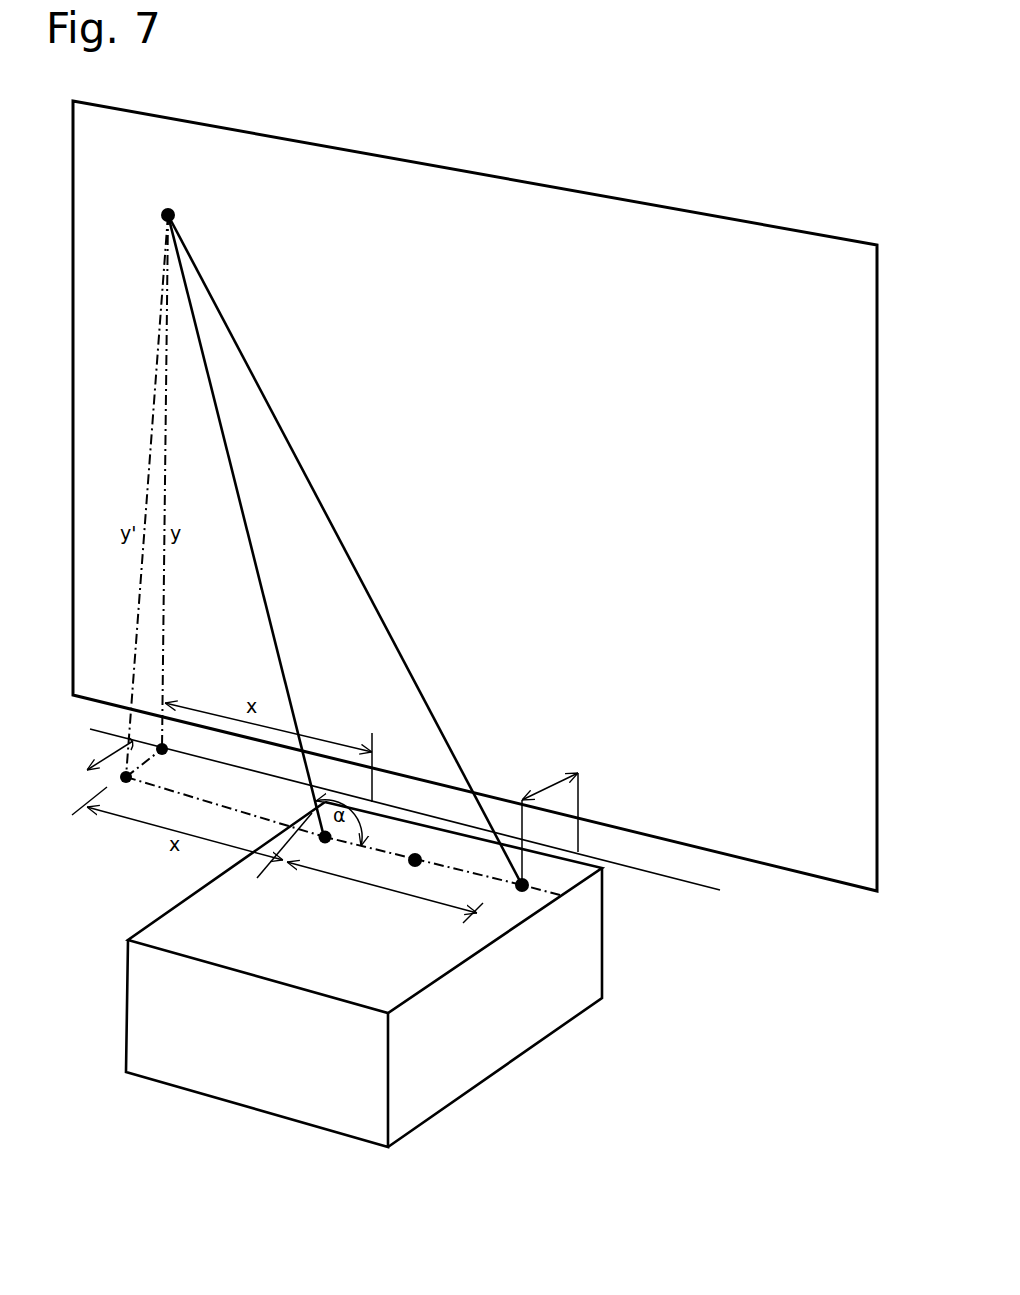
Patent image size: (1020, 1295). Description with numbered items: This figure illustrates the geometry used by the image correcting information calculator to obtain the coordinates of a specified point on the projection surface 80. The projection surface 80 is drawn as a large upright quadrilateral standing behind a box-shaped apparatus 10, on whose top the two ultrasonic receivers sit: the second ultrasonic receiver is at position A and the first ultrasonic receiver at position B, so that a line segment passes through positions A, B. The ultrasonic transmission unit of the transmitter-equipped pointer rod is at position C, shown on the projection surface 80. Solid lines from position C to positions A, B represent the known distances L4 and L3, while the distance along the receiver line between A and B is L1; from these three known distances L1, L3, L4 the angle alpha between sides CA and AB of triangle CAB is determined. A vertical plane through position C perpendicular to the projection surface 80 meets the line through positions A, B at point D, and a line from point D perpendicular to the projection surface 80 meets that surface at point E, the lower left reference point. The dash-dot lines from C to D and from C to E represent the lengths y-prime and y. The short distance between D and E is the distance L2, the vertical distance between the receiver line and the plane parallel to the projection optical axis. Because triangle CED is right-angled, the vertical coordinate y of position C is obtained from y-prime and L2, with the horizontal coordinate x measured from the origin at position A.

The projection surface 80 is at (445, 193).
The projector apparatus 10 is at (468, 1078).
The position A is at (322, 848).
The position B is at (518, 896).
The position C is at (180, 216).
The point D is at (122, 790).
The point E is at (164, 760).
The distance L1 is at (385, 892).
The distance L2 is at (328, 811).
The distance L3 is at (345, 550).
The distance L4 is at (246, 526).